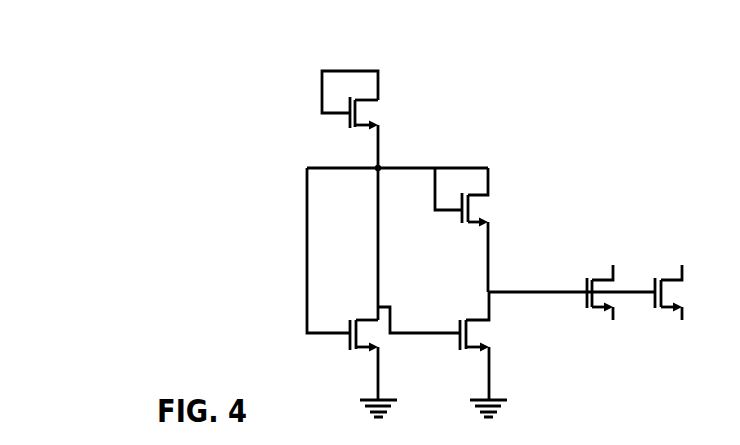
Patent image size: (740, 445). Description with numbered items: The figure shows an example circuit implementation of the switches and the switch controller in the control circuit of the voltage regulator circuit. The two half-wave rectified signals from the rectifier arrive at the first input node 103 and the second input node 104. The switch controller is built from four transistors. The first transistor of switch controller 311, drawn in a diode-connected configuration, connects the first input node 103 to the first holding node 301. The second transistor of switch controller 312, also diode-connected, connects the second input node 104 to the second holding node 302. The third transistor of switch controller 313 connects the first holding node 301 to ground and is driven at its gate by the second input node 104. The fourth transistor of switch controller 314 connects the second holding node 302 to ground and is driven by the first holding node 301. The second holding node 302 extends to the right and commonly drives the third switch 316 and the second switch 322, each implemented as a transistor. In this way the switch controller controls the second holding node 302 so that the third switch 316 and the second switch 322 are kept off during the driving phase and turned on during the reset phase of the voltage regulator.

The first input node 103 is at (355, 70).
The second input node 104 is at (307, 168).
The first transistor of switch controller 311 is at (380, 127).
The second transistor of switch controller 312 is at (489, 193).
The third transistor of switch controller 313 is at (362, 318).
The fourth transistor of switch controller 314 is at (472, 318).
The first holding node 301 is at (413, 335).
The second holding node 302 is at (552, 295).
The third switch 316 is at (602, 276).
The second switch 322 is at (673, 276).